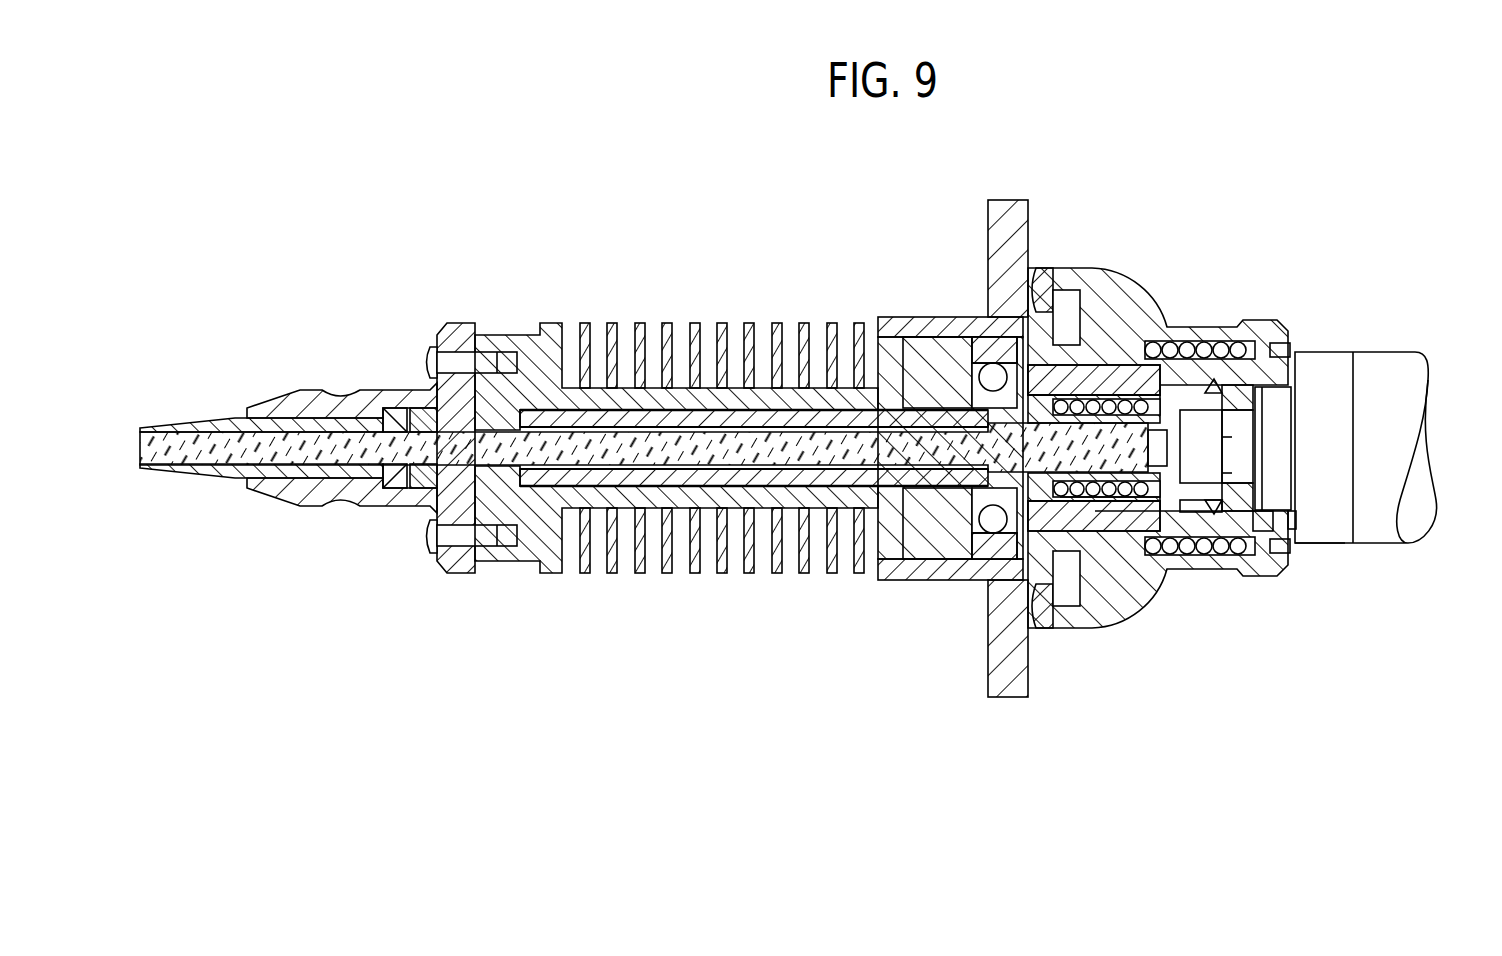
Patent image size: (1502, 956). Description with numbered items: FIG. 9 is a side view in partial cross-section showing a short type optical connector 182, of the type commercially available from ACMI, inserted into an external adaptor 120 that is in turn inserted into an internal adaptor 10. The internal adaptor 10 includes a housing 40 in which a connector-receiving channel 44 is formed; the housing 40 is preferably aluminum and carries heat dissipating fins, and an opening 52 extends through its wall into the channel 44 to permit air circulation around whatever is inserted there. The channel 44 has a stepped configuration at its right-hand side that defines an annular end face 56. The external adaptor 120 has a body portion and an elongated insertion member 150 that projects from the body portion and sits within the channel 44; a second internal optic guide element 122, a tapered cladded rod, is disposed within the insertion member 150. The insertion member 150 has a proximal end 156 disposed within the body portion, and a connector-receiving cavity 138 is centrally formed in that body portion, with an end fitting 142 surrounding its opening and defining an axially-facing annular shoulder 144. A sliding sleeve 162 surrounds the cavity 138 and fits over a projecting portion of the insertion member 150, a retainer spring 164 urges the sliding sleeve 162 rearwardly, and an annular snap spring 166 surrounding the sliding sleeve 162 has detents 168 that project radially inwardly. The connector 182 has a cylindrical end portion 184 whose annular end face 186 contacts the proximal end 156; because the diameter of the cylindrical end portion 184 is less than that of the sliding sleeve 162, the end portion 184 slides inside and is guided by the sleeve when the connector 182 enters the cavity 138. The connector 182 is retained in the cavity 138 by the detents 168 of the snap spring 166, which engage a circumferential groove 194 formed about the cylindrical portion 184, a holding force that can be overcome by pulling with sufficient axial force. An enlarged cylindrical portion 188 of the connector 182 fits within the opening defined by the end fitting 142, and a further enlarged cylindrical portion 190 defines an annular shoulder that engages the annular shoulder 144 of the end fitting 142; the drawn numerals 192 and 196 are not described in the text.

The internal adaptor 10 is at (455, 314).
The housing 40 is at (666, 316).
The connector-receiving channel 44 is at (594, 408).
The opening 52 is at (984, 364).
The annular end face 56 is at (1038, 347).
The external adaptor 120 is at (876, 400).
The second internal optic guide element 122 is at (598, 471).
The elongated insertion member 150 is at (654, 488).
The connector-receiving cavity 138 is at (1216, 515).
The end fitting 142 is at (1262, 531).
The annular shoulder 144 is at (1298, 528).
The proximal end 156 is at (1178, 395).
The sliding sleeve 162 is at (1173, 498).
The retainer spring 164 is at (1120, 515).
The annular snap spring 166 is at (1205, 513).
The detents 168 is at (1227, 473).
The short type optical connector 182 is at (1346, 338).
The cylindrical end portion 184 is at (1196, 398).
The annular end face 186 is at (1137, 398).
The enlarged cylindrical portion 188 is at (1277, 385).
The further enlarged cylindrical portion 190 is at (1338, 546).
The snap ring 192 is at (1281, 356).
The circumferential groove 194 is at (1227, 437).
The conduit 196 is at (1408, 545).